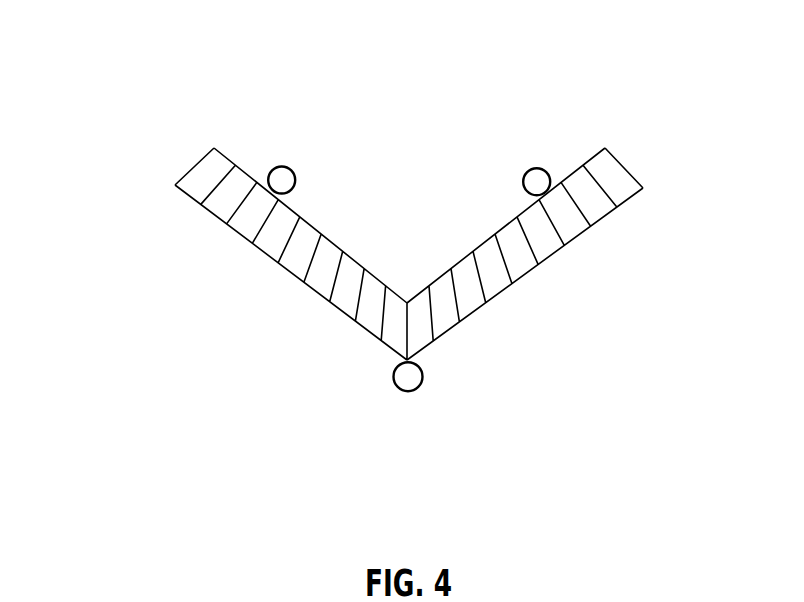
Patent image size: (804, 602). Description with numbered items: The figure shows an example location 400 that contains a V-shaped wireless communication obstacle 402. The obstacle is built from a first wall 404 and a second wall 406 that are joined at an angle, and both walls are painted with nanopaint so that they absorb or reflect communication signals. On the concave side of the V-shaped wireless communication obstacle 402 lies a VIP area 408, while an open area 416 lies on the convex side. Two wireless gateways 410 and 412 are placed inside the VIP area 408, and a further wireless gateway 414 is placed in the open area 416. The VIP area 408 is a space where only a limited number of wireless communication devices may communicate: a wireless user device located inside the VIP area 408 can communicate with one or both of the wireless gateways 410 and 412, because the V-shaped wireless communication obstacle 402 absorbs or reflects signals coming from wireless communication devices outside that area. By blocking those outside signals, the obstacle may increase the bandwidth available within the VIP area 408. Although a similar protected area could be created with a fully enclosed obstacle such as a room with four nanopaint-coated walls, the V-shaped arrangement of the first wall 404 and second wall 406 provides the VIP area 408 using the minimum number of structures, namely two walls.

The location 400 is at (135, 68).
The V-shaped wireless communication obstacle 402 is at (187, 162).
The first wall 404 is at (283, 268).
The second wall 406 is at (550, 257).
The VIP area 408 is at (435, 242).
The wireless gateway 410 is at (282, 178).
The wireless gateway 412 is at (526, 174).
The wireless gateway 414 is at (418, 389).
The open area 416 is at (313, 402).